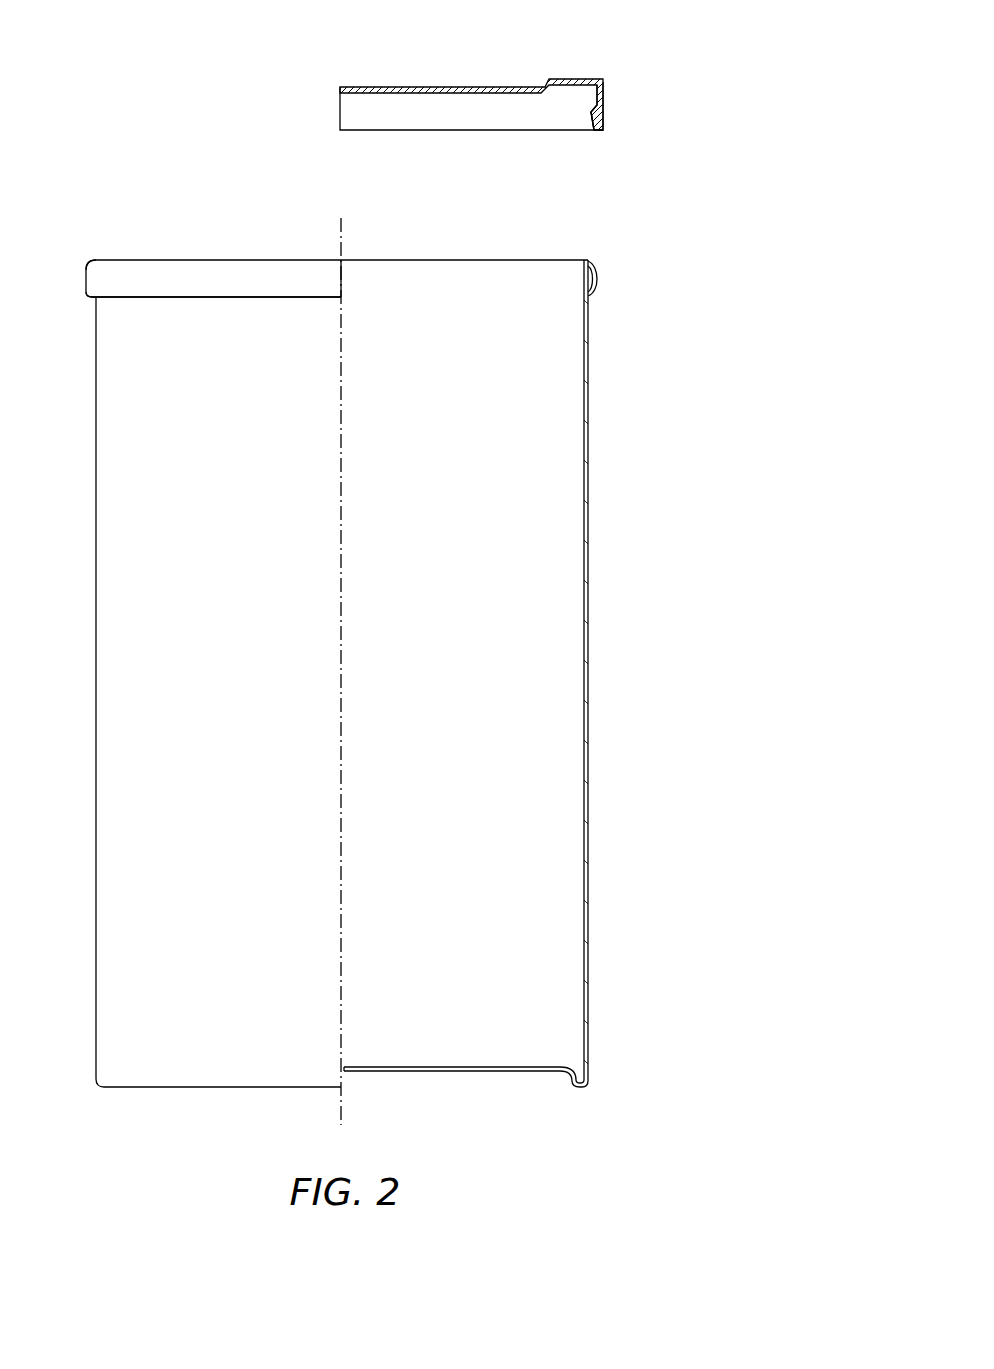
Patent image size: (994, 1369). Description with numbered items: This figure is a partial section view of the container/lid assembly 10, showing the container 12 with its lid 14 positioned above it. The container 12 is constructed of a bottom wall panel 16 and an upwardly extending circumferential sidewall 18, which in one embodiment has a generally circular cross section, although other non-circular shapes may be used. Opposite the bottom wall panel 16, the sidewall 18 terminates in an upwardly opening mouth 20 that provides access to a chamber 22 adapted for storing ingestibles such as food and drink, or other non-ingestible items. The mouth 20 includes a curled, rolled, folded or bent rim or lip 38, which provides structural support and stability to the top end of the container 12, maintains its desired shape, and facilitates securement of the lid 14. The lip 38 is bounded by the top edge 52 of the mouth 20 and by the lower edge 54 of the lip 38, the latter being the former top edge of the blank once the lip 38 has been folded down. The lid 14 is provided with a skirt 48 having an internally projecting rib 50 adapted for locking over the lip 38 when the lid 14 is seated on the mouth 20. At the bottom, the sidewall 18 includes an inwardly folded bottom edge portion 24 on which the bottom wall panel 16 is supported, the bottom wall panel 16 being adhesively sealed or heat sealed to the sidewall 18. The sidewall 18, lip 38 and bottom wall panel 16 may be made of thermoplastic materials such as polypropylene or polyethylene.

The container/lid assembly 10 is at (128, 99).
The container 12 is at (399, 646).
The lid 14 is at (617, 76).
The bottom wall panel 16 is at (430, 1073).
The sidewall 18 is at (590, 714).
The mouth 20 is at (389, 254).
The chamber 22 is at (464, 311).
The bottom edge portion 24 is at (559, 1078).
The lip 38 is at (165, 288).
The skirt 48 is at (604, 95).
The rib 50 is at (590, 108).
The top edge 52 is at (240, 258).
The lower edge 54 is at (240, 298).